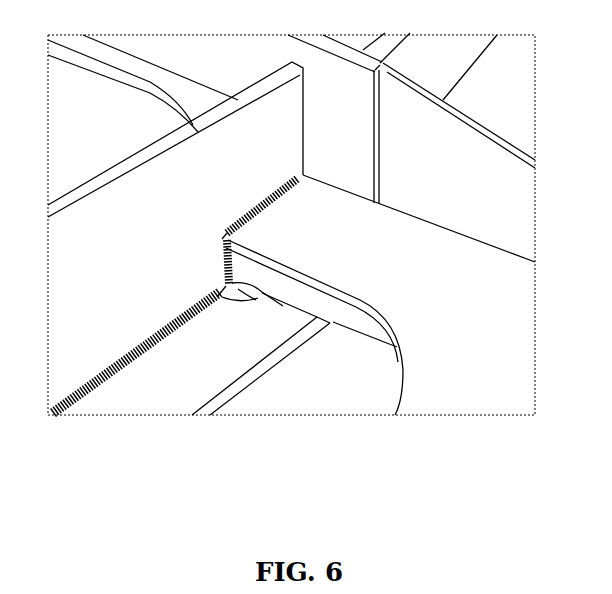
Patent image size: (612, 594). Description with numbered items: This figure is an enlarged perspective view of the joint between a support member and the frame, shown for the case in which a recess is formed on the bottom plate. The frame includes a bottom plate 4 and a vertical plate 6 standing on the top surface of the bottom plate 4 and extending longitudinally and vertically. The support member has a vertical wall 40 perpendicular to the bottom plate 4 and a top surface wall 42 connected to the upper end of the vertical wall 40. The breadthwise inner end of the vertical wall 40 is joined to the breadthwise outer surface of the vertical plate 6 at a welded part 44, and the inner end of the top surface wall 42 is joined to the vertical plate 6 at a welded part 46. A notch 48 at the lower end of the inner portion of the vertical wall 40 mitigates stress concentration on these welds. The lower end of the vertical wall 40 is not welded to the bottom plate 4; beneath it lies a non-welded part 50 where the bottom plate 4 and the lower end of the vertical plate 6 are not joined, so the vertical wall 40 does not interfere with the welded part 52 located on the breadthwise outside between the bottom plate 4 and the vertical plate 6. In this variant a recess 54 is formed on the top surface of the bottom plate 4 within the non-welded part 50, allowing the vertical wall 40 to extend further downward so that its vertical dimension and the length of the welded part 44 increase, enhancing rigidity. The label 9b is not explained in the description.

The bottom plate 4 is at (221, 394).
The vertical plate 6 is at (68, 313).
The sealing surface 9b is at (497, 365).
The vertical wall 40 is at (343, 322).
The top surface wall 42 is at (503, 308).
The welded part 44 is at (222, 262).
The welded part 46 is at (279, 198).
The notch 48 is at (292, 308).
The non-welded part 50 is at (213, 292).
The welded part 52 is at (157, 352).
The recess 54 is at (246, 302).